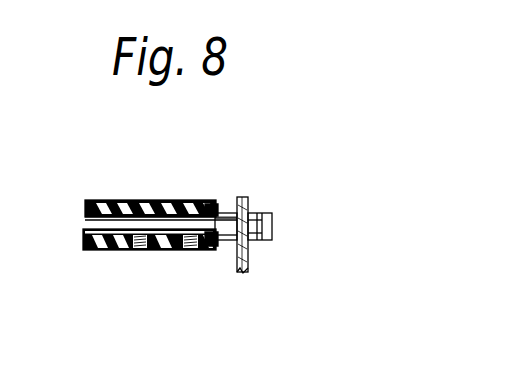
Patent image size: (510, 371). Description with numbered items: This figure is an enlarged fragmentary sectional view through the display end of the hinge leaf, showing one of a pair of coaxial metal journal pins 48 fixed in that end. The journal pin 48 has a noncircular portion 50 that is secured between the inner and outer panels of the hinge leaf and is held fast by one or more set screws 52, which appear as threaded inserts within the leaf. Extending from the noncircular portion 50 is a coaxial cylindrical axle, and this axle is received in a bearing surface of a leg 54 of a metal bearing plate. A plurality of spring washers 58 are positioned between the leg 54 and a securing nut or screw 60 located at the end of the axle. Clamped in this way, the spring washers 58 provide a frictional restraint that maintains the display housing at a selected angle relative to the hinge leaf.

The journal pin 48 is at (223, 245).
The noncircular portion 50 is at (105, 249).
The set screw 52 is at (145, 249).
The leg 54 is at (247, 257).
The spring washer 58 is at (253, 205).
The securing nut or screw 60 is at (273, 227).